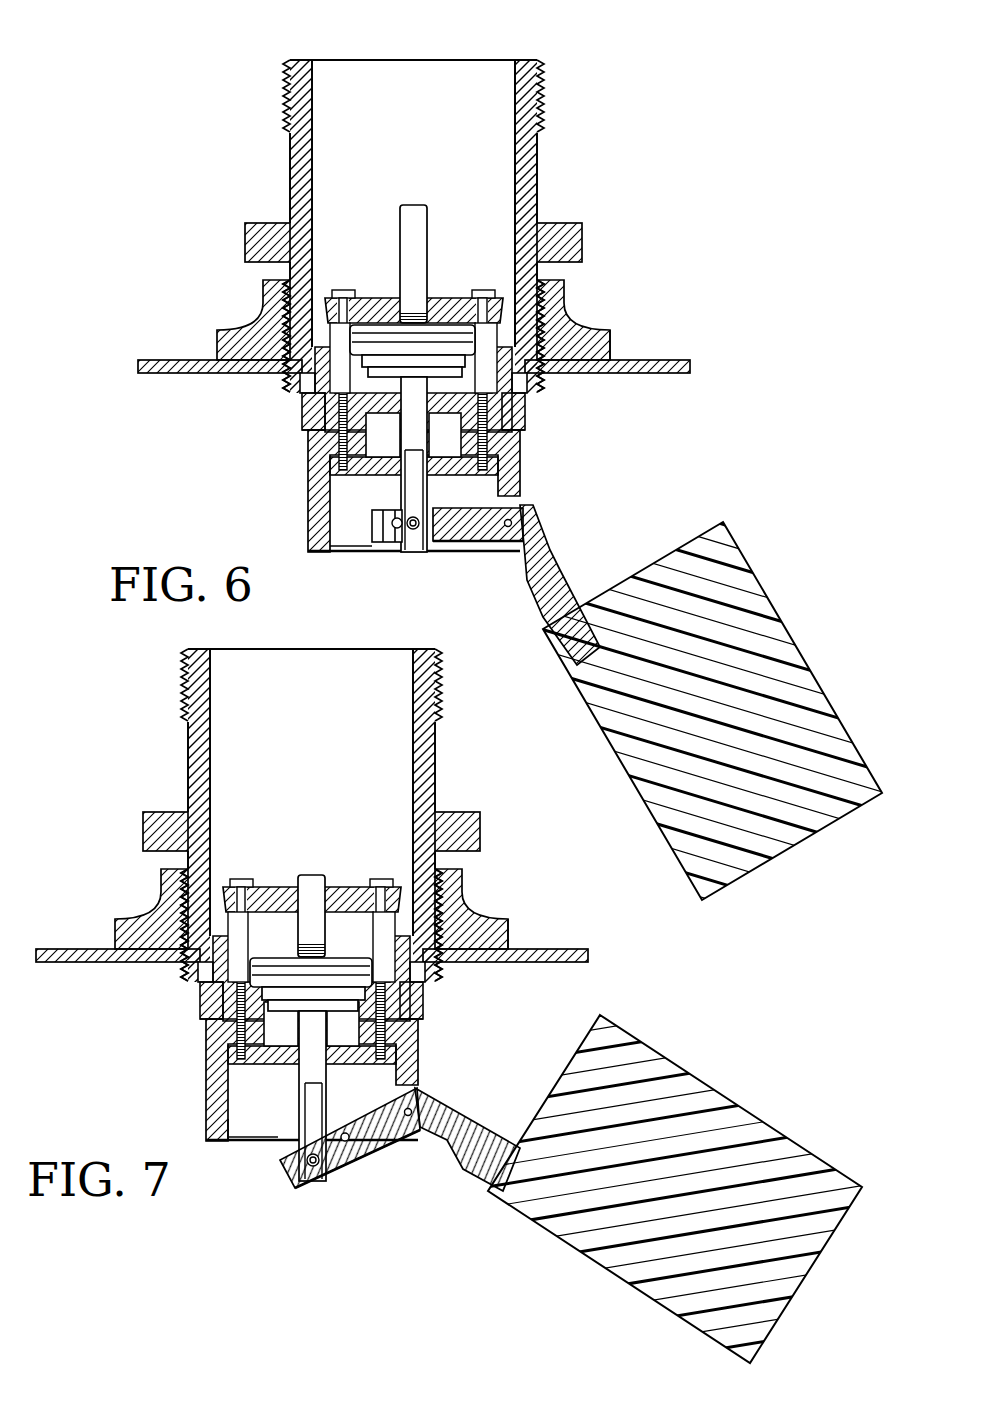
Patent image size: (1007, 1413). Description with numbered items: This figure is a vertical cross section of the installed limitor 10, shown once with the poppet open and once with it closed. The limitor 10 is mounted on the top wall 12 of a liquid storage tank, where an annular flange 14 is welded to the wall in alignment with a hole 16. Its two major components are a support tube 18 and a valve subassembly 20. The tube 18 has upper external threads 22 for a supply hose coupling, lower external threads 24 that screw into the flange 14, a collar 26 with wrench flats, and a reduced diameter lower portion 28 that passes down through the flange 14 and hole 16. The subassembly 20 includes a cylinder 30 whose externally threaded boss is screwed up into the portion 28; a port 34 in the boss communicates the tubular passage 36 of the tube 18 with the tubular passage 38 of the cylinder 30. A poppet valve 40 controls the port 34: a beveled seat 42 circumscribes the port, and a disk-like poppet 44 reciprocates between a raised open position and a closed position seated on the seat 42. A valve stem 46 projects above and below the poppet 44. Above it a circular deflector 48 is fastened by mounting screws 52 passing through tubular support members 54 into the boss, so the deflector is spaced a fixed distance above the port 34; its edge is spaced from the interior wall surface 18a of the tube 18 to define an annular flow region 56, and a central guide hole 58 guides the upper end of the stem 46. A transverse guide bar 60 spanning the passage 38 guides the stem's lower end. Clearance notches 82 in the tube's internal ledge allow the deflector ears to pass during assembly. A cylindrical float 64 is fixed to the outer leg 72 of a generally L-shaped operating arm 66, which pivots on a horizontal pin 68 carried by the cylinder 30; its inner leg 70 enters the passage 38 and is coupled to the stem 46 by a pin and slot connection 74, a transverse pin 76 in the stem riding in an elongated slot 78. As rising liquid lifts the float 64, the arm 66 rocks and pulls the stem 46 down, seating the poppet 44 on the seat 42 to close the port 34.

In FIG. 6, the limitor 10 is at (600, 72).
In FIG. 7, the limitor 10 is at (246, 805).
In FIG. 6, the top wall 12 is at (690, 360).
In FIG. 7, the top wall 12 is at (324, 929).
In FIG. 6, the annular flange 14 is at (608, 325).
In FIG. 7, the annular flange 14 is at (533, 920).
In FIG. 6, the hole 16 is at (300, 375).
In FIG. 7, the hole 16 is at (304, 977).
In FIG. 6, the support tube 18 is at (543, 200).
In FIG. 7, the support tube 18 is at (343, 815).
In FIG. 6, the interior wall surface 18a is at (515, 158).
In FIG. 7, the interior wall surface 18a is at (467, 792).
In FIG. 6, the valve subassembly 20 is at (421, 454).
In FIG. 7, the valve subassembly 20 is at (319, 1043).
In FIG. 6, the upper external threads 22 is at (540, 118).
In FIG. 7, the upper external threads 22 is at (343, 685).
In FIG. 6, the lower external threads 24 is at (590, 290).
In FIG. 7, the lower external threads 24 is at (498, 901).
In FIG. 6, the collar 26 is at (585, 240).
In FIG. 7, the collar 26 is at (349, 829).
In FIG. 6, the reduced diameter lower portion 28 is at (325, 412).
In FIG. 7, the reduced diameter lower portion 28 is at (306, 985).
In FIG. 6, the cylinder 30 is at (320, 518).
In FIG. 7, the cylinder 30 is at (255, 1084).
In FIG. 6, the port 34 is at (372, 445).
In FIG. 7, the port 34 is at (244, 1068).
In FIG. 6, the tubular passage 36 is at (398, 75).
In FIG. 7, the tubular passage 36 is at (311, 630).
In FIG. 6, the tubular passage 38 is at (342, 545).
In FIG. 7, the tubular passage 38 is at (222, 1158).
In FIG. 6, the poppet valve 40 is at (437, 276).
In FIG. 7, the poppet valve 40 is at (327, 983).
In FIG. 6, the beveled seat 42 is at (460, 400).
In FIG. 7, the beveled seat 42 is at (311, 1024).
In FIG. 6, the poppet 44 is at (458, 325).
In FIG. 7, the poppet 44 is at (311, 916).
In FIG. 6, the valve stem 46 is at (413, 205).
In FIG. 7, the valve stem 46 is at (312, 861).
In FIG. 6, the deflector 48 is at (367, 298).
In FIG. 7, the deflector 48 is at (312, 867).
In FIG. 6, the mounting screws 52 is at (343, 289).
In FIG. 7, the mounting screws 52 is at (305, 933).
In FIG. 6, the tubular support members 54 is at (318, 400).
In FIG. 7, the tubular support members 54 is at (306, 1000).
In FIG. 6, the annular flow region 56 is at (300, 312).
In FIG. 7, the annular flow region 56 is at (146, 901).
In FIG. 6, the guide hole 58 is at (393, 298).
In FIG. 7, the guide hole 58 is at (311, 910).
In FIG. 6, the guide bar 60 is at (370, 545).
In FIG. 7, the guide bar 60 is at (253, 1161).
In FIG. 6, the float 64 is at (760, 570).
In FIG. 7, the float 64 is at (730, 1088).
In FIG. 6, the operating arm 66 is at (541, 585).
In FIG. 7, the operating arm 66 is at (400, 1153).
In FIG. 6, the pin 68 is at (507, 528).
In FIG. 7, the pin 68 is at (413, 1154).
In FIG. 6, the inner leg 70 is at (465, 545).
In FIG. 7, the inner leg 70 is at (350, 1153).
In FIG. 6, the outer leg 72 is at (560, 565).
In FIG. 7, the outer leg 72 is at (467, 1153).
In FIG. 6, the pin and slot connection 74 is at (420, 557).
In FIG. 7, the pin and slot connection 74 is at (288, 1175).
In FIG. 6, the transverse pin 76 is at (415, 530).
In FIG. 7, the transverse pin 76 is at (324, 1196).
In FIG. 6, the elongated slot 78 is at (396, 532).
In FIG. 7, the elongated slot 78 is at (356, 1175).
In FIG. 6, the clearance notches 82 is at (328, 425).
In FIG. 7, the clearance notches 82 is at (306, 1034).